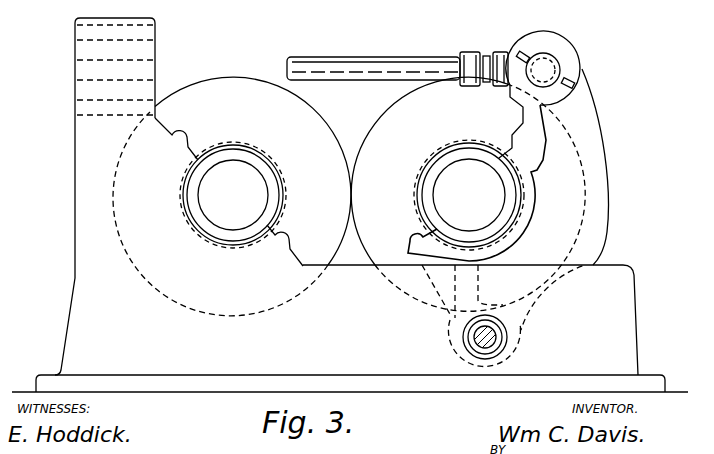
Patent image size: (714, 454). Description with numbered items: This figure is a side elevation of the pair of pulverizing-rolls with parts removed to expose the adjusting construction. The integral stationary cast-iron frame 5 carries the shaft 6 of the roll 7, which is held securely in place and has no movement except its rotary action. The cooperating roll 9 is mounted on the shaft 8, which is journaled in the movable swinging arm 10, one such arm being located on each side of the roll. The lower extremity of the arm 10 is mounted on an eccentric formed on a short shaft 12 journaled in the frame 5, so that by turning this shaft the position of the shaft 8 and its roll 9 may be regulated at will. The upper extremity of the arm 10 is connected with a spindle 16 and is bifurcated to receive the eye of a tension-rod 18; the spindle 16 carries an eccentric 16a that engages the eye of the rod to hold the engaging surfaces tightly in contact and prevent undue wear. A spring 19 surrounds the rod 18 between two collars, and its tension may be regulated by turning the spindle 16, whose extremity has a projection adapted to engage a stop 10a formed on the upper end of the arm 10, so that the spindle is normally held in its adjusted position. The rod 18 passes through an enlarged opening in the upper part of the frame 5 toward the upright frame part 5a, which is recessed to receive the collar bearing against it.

The stationary frame 5 is at (350, 328).
The frame part 5a is at (105, 196).
The shaft 6 is at (229, 192).
The roll 7 is at (232, 196).
The shaft 8 is at (469, 195).
The cooperating roll 9 is at (468, 194).
The swinging arm 10 is at (603, 173).
The stop 10a is at (575, 81).
The short shaft 12 is at (470, 337).
The spindle 16 is at (548, 60).
The eccentric 16a is at (527, 56).
The tension-rod 18 is at (387, 62).
The spring 19 is at (488, 53).